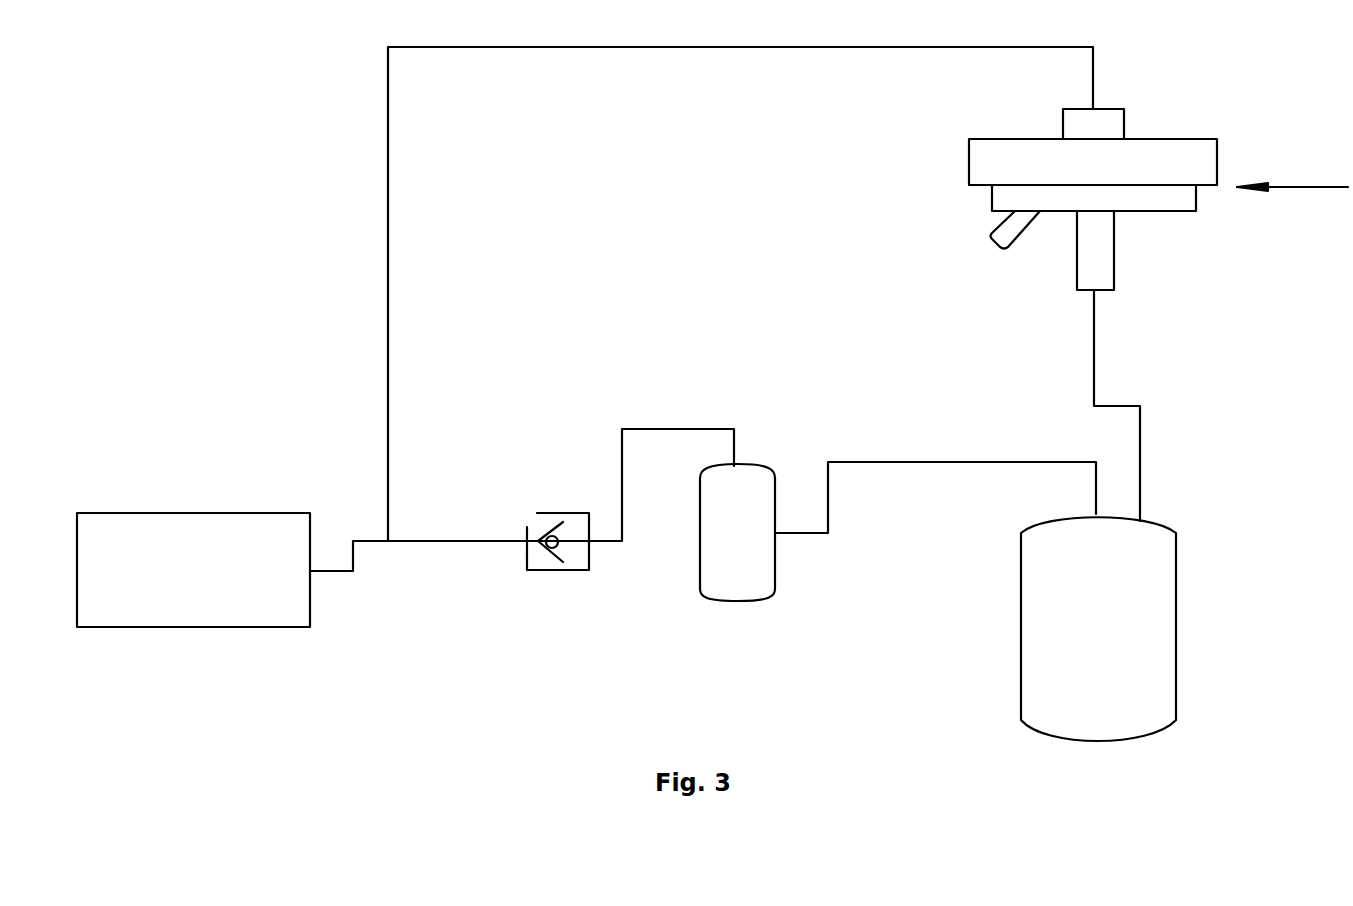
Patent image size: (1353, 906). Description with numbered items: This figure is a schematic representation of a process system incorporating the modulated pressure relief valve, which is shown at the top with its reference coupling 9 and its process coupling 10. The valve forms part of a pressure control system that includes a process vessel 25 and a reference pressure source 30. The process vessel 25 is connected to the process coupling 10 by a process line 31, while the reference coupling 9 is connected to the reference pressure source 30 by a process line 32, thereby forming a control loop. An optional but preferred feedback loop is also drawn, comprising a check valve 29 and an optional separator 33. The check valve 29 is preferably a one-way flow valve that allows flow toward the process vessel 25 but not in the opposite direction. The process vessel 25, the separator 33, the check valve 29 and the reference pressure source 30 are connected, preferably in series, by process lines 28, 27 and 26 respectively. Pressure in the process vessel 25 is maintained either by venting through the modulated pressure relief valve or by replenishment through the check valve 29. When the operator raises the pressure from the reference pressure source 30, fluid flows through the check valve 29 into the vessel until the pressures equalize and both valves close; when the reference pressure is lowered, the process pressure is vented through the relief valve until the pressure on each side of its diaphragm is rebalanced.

The reference coupling 9 is at (1072, 168).
The process coupling 10 is at (1007, 260).
The process vessel 25 is at (1138, 658).
The process line 26 is at (418, 599).
The process line 27 is at (655, 449).
The process line 28 is at (935, 470).
The check valve 29 is at (593, 586).
The reference pressure source 30 is at (193, 526).
The process line 31 is at (1162, 405).
The process line 32 is at (740, 294).
The separator 33 is at (779, 570).